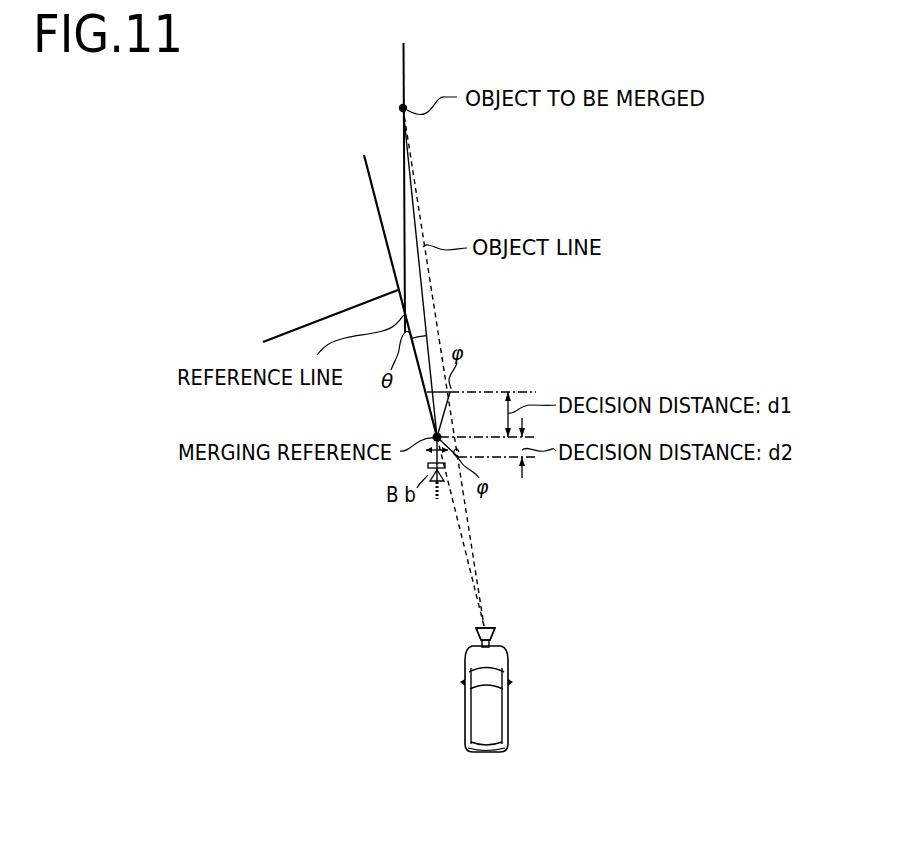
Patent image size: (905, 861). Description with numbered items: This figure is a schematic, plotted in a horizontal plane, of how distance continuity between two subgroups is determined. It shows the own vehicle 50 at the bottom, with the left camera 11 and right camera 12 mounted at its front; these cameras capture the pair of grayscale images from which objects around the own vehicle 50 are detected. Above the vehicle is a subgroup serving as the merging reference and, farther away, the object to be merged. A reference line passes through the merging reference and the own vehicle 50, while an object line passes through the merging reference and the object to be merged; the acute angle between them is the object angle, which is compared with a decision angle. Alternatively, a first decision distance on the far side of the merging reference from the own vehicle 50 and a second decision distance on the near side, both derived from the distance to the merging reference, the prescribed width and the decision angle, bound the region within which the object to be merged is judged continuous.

The left camera 11 is at (490, 627).
The right camera 12 is at (542, 622).
The own vehicle 50 is at (507, 672).